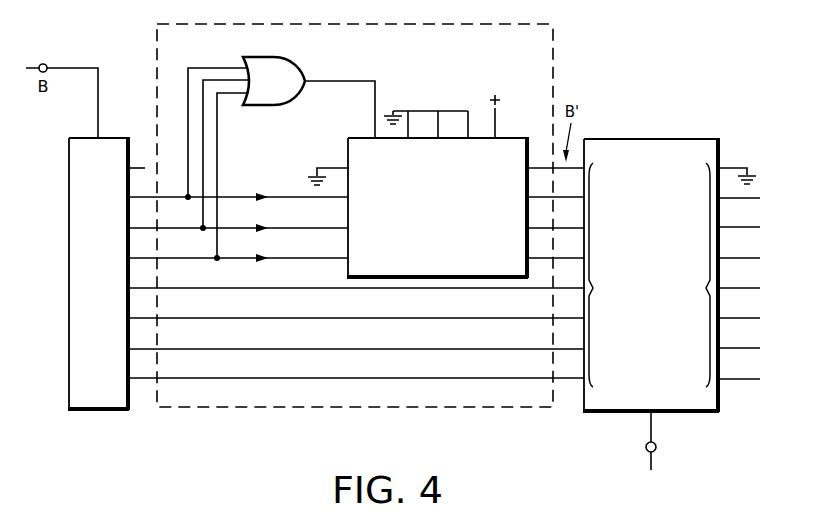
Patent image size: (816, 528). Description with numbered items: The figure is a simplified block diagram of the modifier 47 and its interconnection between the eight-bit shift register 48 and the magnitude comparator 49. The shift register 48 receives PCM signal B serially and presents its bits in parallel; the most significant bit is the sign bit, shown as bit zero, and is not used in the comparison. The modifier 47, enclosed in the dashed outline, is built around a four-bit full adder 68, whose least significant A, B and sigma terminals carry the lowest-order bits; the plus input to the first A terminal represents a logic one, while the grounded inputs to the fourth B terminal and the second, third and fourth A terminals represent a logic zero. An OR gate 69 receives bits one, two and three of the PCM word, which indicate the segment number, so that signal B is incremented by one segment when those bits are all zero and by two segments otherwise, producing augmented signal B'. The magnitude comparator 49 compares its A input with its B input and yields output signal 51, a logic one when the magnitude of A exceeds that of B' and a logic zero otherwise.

The modifier 47 is at (443, 26).
The eight-bit shift register 48 is at (96, 411).
The magnitude comparator 49 is at (650, 139).
The output signal 51 is at (645, 447).
The 4-bit full adder 68 is at (514, 138).
The OR gate 69 is at (284, 57).